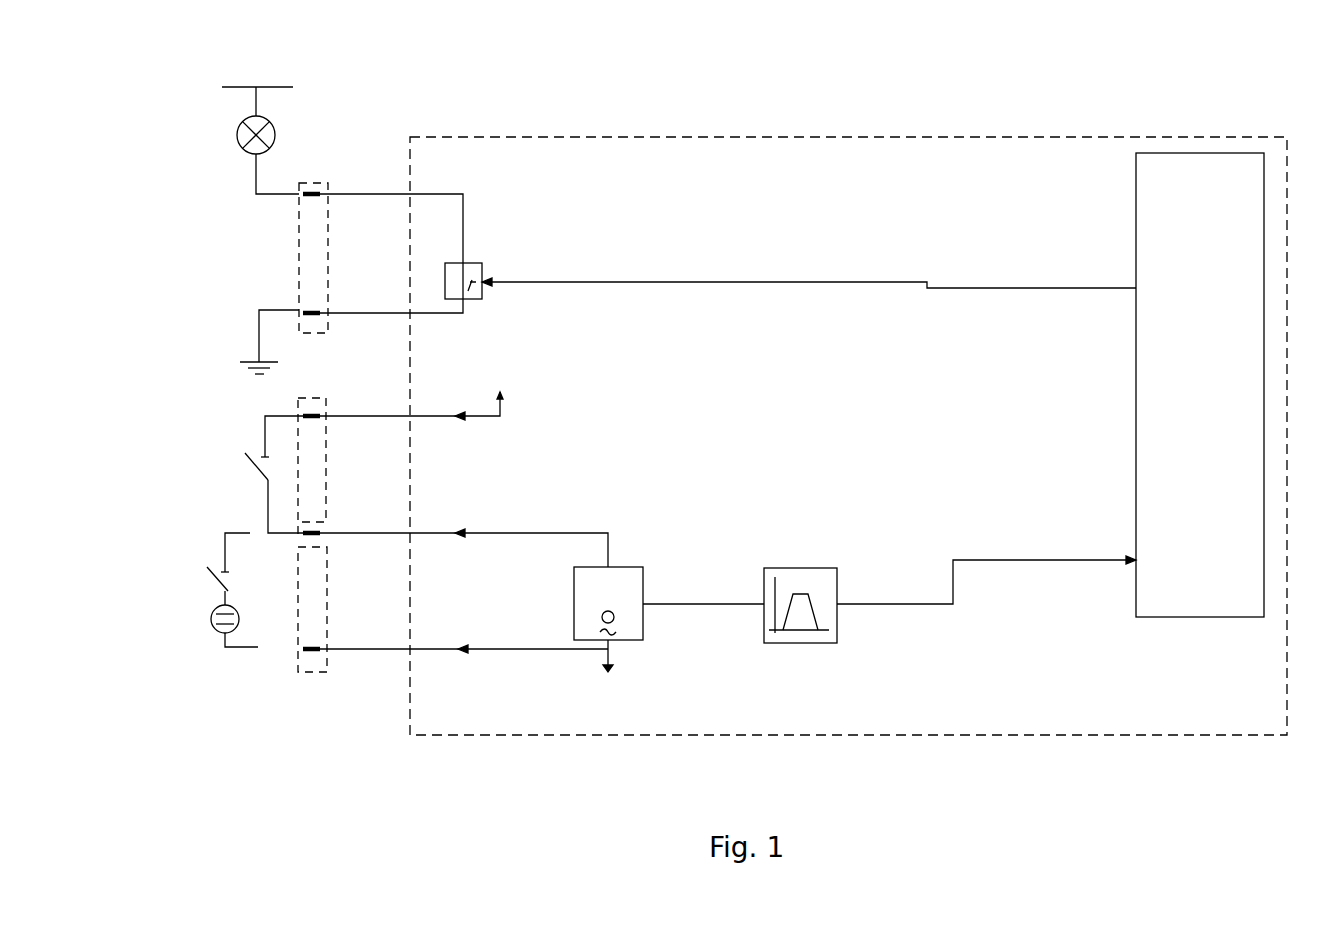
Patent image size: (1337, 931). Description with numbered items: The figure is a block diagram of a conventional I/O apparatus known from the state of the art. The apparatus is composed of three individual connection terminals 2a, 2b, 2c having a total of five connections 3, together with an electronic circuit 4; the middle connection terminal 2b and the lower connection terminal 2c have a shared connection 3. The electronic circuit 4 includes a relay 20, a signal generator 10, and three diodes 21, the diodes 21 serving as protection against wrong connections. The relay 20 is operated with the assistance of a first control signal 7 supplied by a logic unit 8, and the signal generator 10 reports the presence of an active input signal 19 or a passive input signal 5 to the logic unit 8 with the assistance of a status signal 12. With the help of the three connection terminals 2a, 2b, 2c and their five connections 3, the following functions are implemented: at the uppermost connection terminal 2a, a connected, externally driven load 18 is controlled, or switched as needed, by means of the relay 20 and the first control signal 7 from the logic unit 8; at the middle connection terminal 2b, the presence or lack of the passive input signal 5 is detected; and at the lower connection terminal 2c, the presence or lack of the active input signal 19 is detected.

The uppermost connection terminal 2a is at (317, 183).
The middle connection terminal 2b is at (304, 398).
The lower connection terminal 2c is at (318, 672).
The connections 3 is at (322, 196).
The electronic circuit 4 is at (845, 137).
The passive input signal 5 is at (263, 432).
The first control signal 7 is at (740, 282).
The logic unit 8 is at (1208, 378).
The signal generator 10 is at (630, 567).
The status signal 12 is at (975, 560).
The externally driven load 18 is at (237, 138).
The active input signal 19 is at (224, 537).
The relay 20 is at (470, 263).
The diodes 21 is at (455, 416).